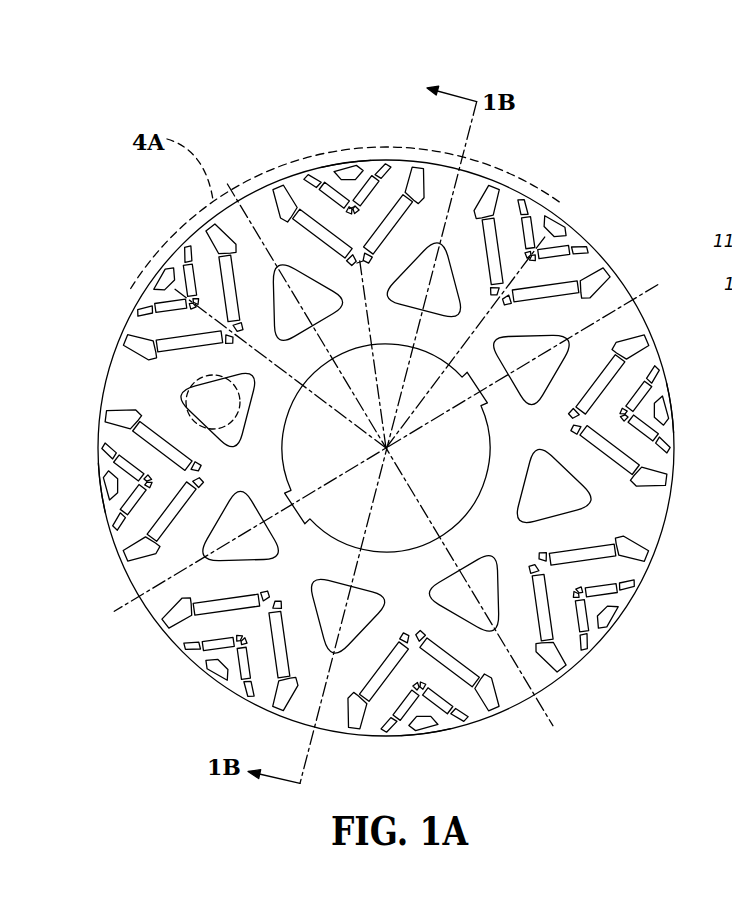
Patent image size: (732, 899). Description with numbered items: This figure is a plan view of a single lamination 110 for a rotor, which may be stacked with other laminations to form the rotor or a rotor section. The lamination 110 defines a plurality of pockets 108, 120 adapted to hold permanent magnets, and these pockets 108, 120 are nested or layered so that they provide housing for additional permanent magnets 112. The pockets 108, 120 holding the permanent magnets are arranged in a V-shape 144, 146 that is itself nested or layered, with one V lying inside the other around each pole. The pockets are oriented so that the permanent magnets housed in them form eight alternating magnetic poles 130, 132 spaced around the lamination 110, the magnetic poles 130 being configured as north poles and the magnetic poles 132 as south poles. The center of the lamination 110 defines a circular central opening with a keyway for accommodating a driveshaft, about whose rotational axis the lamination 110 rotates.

The pocket 108 is at (288, 200).
The lamination 110 is at (384, 407).
The permanent magnet 112 is at (152, 316).
The pocket 120 is at (330, 193).
The magnetic pole 130 is at (348, 155).
The magnetic pole 132 is at (150, 268).
The V-shape 144 is at (361, 282).
The V-shape 146 is at (350, 196).